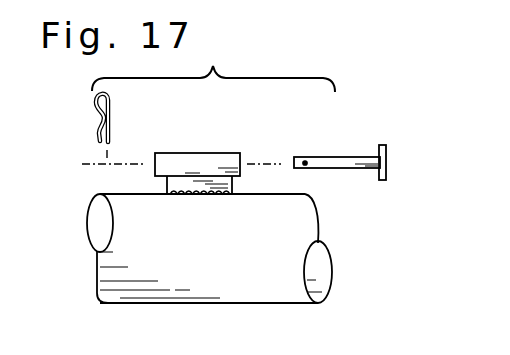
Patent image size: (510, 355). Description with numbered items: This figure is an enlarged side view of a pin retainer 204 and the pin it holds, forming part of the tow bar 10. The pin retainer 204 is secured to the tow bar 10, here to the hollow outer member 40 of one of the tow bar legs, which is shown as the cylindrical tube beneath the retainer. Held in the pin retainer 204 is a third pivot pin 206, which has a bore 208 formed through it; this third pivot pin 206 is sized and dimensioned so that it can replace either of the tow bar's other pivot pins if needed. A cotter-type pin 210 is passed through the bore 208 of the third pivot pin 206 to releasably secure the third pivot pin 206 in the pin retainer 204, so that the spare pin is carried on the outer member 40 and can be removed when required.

The tow bar 10 is at (352, 71).
The hollow outer member 40 is at (313, 226).
The pin retainer 204 is at (197, 153).
The third pivot pin 206 is at (350, 157).
The bore 208 is at (304, 160).
The cotter-type pin 210 is at (97, 130).